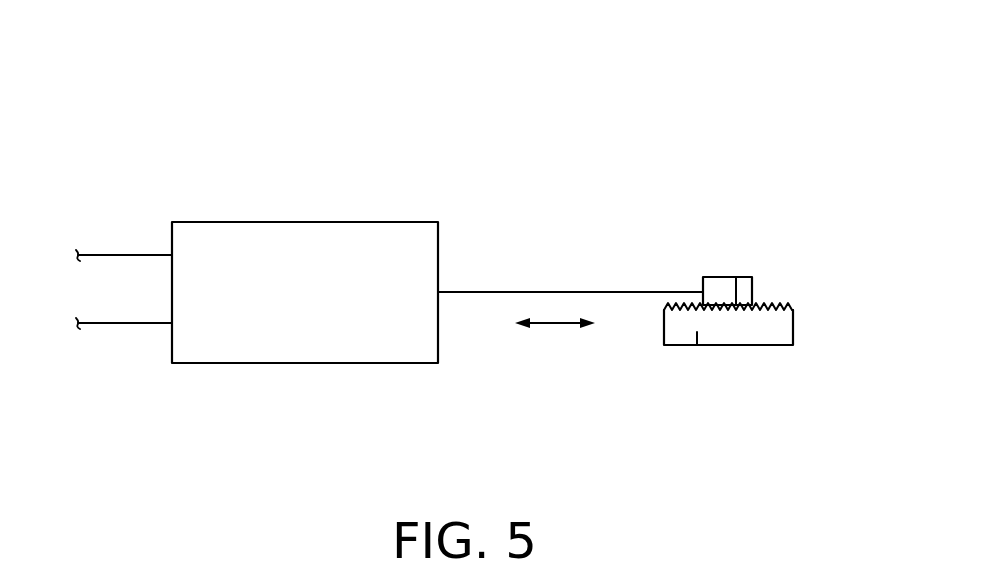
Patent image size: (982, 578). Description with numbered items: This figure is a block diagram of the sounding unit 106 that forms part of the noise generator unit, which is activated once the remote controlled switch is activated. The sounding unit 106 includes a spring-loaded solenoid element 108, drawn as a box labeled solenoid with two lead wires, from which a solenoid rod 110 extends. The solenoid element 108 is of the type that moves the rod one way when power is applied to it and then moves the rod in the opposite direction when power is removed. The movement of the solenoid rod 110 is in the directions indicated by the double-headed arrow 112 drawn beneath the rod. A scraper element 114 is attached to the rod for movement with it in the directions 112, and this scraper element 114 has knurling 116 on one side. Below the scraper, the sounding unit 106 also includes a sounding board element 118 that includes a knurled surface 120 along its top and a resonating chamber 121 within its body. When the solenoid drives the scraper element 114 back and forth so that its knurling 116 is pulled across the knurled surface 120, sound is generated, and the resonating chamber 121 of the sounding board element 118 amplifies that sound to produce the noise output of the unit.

The sounding unit 106 is at (167, 393).
The spring-loaded solenoid element 108 is at (390, 233).
The solenoid rod 110 is at (493, 290).
The double-headed arrow 112 is at (552, 323).
The scraper element 114 is at (752, 277).
The knurling 116 is at (736, 277).
The sounding board element 118 is at (772, 347).
The knurled surface 120 is at (778, 297).
The resonating chamber 121 is at (697, 345).